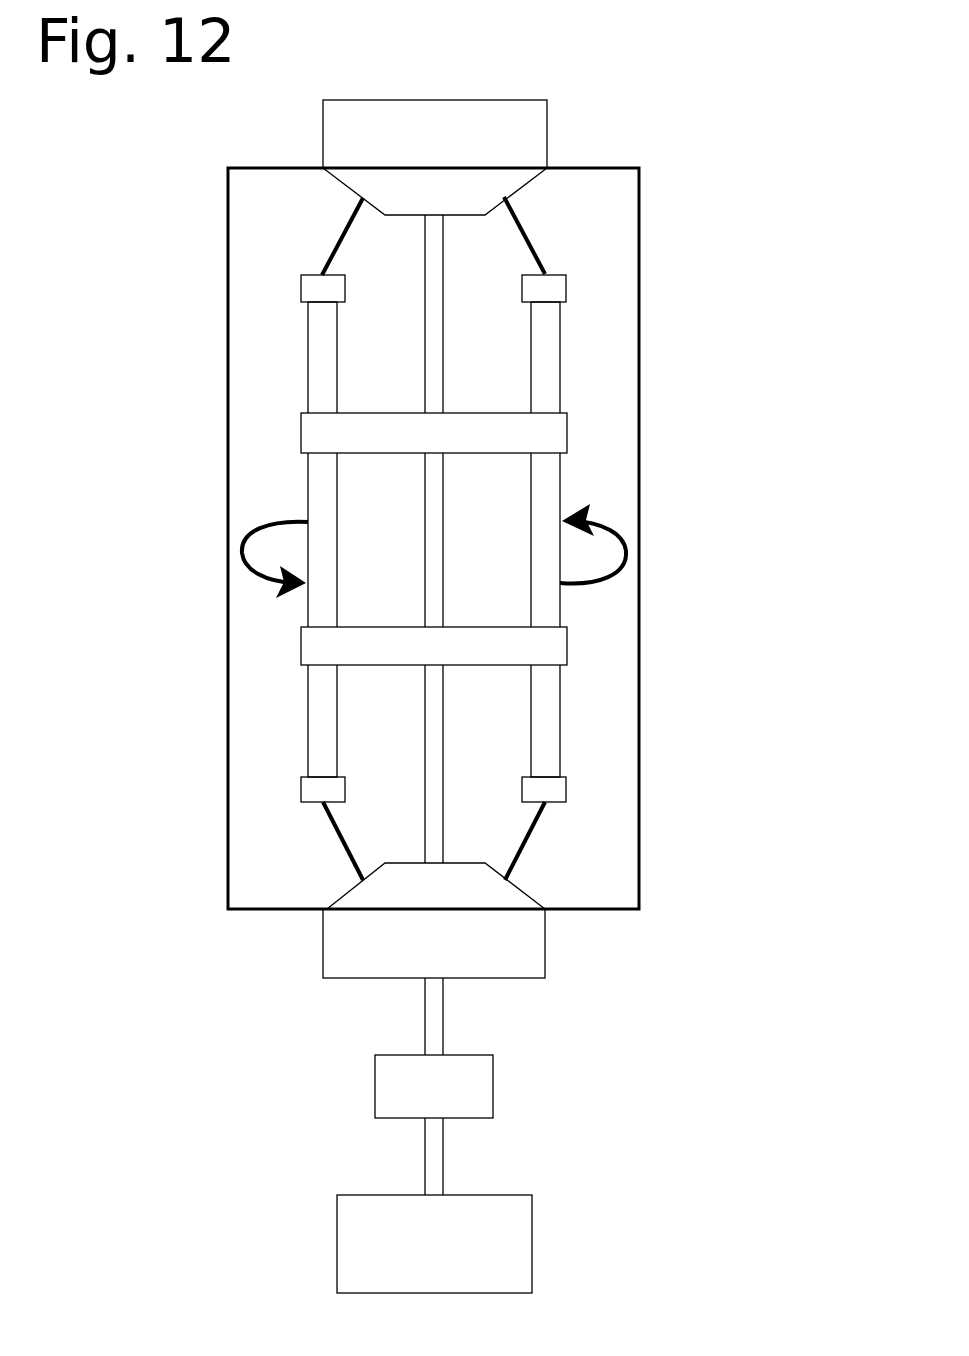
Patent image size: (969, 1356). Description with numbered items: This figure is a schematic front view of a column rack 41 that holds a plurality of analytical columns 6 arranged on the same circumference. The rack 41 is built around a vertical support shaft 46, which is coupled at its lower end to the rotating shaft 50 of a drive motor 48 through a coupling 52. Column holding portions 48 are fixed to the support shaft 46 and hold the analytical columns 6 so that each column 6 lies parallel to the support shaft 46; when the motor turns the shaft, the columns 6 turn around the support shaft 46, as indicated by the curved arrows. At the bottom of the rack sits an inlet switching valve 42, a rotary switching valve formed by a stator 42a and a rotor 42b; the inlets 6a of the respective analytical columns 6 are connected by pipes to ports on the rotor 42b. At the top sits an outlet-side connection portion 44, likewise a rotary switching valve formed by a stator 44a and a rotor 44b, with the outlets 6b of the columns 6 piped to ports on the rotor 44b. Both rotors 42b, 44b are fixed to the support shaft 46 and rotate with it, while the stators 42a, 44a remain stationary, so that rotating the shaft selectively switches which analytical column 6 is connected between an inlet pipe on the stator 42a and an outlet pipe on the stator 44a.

The column rack 41 is at (640, 213).
The outlet-side connection portion 44 is at (517, 140).
The stator 44a is at (547, 118).
The rotor 44b is at (535, 187).
The inlet switching valve 42 is at (529, 931).
The stator 42a is at (547, 948).
The rotor 42b is at (525, 893).
The analytical column 6 is at (547, 365).
The inlet 6a is at (555, 790).
The outlet 6b is at (560, 290).
The drive motor / column holding portion 48 is at (547, 432).
The support shaft 46 is at (433, 740).
The rotating shaft 50 is at (438, 1160).
The coupling 52 is at (493, 1083).